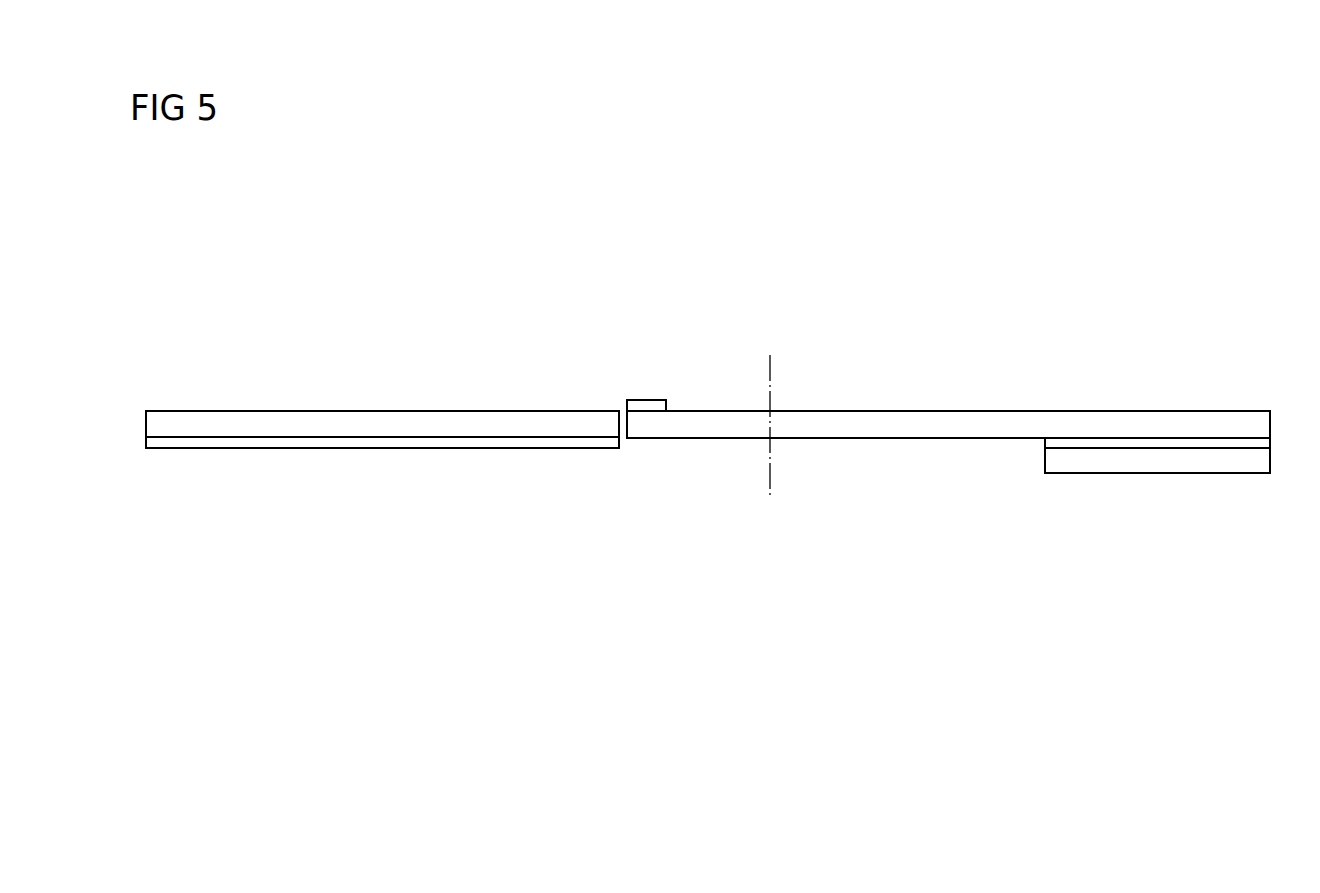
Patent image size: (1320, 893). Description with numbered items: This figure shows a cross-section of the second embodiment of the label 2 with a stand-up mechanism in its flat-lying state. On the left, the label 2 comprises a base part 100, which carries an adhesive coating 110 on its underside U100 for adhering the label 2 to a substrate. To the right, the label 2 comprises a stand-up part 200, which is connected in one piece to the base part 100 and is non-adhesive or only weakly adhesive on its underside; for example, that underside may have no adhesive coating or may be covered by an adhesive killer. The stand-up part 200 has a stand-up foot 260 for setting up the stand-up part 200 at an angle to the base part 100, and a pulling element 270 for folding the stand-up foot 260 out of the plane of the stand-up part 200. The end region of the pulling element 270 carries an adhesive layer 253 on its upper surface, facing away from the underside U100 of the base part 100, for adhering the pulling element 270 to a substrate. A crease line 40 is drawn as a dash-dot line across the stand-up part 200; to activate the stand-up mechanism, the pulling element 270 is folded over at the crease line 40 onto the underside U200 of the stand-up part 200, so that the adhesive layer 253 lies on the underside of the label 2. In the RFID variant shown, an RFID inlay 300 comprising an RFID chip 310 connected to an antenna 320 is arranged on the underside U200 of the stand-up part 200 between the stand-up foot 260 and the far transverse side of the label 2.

The label 2 is at (194, 231).
The base part 100 is at (282, 420).
The adhesive coating 110 is at (278, 450).
The underside of the base part U100 is at (447, 426).
The stand-up part 200 is at (1143, 366).
The adhesive layer 253 is at (648, 406).
The stand-up foot 260 is at (952, 421).
The pulling element 270 is at (714, 432).
The underside of the stand-up part U200 is at (940, 445).
The RFID inlay 300 is at (1157, 486).
The RFID chip 310 is at (1157, 486).
The antenna 320 is at (1158, 465).
The crease line 40 is at (771, 372).